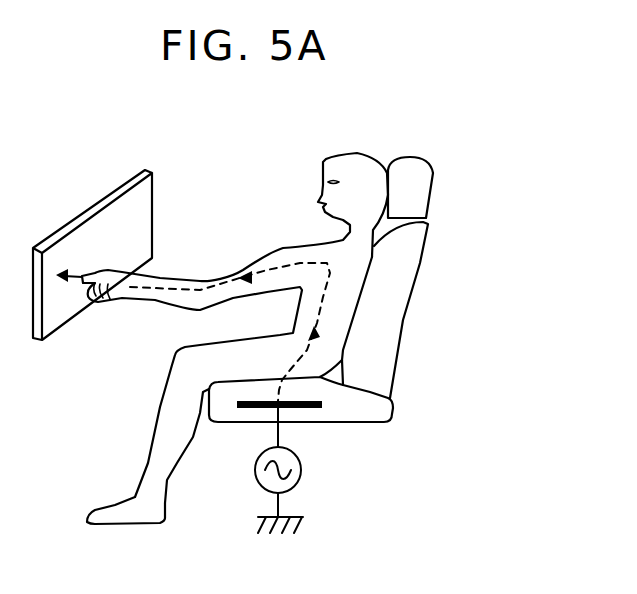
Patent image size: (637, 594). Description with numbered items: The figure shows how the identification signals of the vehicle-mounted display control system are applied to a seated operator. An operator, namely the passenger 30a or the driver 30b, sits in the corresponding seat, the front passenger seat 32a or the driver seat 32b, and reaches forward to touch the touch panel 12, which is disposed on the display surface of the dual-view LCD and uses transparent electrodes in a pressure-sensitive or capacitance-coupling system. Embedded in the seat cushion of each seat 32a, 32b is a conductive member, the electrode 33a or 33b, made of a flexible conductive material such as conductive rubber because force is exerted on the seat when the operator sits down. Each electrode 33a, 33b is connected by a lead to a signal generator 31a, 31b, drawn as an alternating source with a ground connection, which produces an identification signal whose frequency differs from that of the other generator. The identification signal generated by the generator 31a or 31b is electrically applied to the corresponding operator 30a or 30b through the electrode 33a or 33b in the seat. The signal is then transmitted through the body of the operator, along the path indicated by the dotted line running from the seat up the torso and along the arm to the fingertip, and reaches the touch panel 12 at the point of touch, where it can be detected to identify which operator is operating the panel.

The touch panel 12 is at (82, 214).
The passenger 30a is at (320, 338).
The driver 30b is at (357, 258).
The signal generator 31a is at (215, 487).
The signal generator 31b is at (256, 478).
The front passenger seat 32a is at (380, 301).
The driver seat 32b is at (380, 406).
The electrode 33a is at (361, 455).
The electrode 33b is at (322, 405).